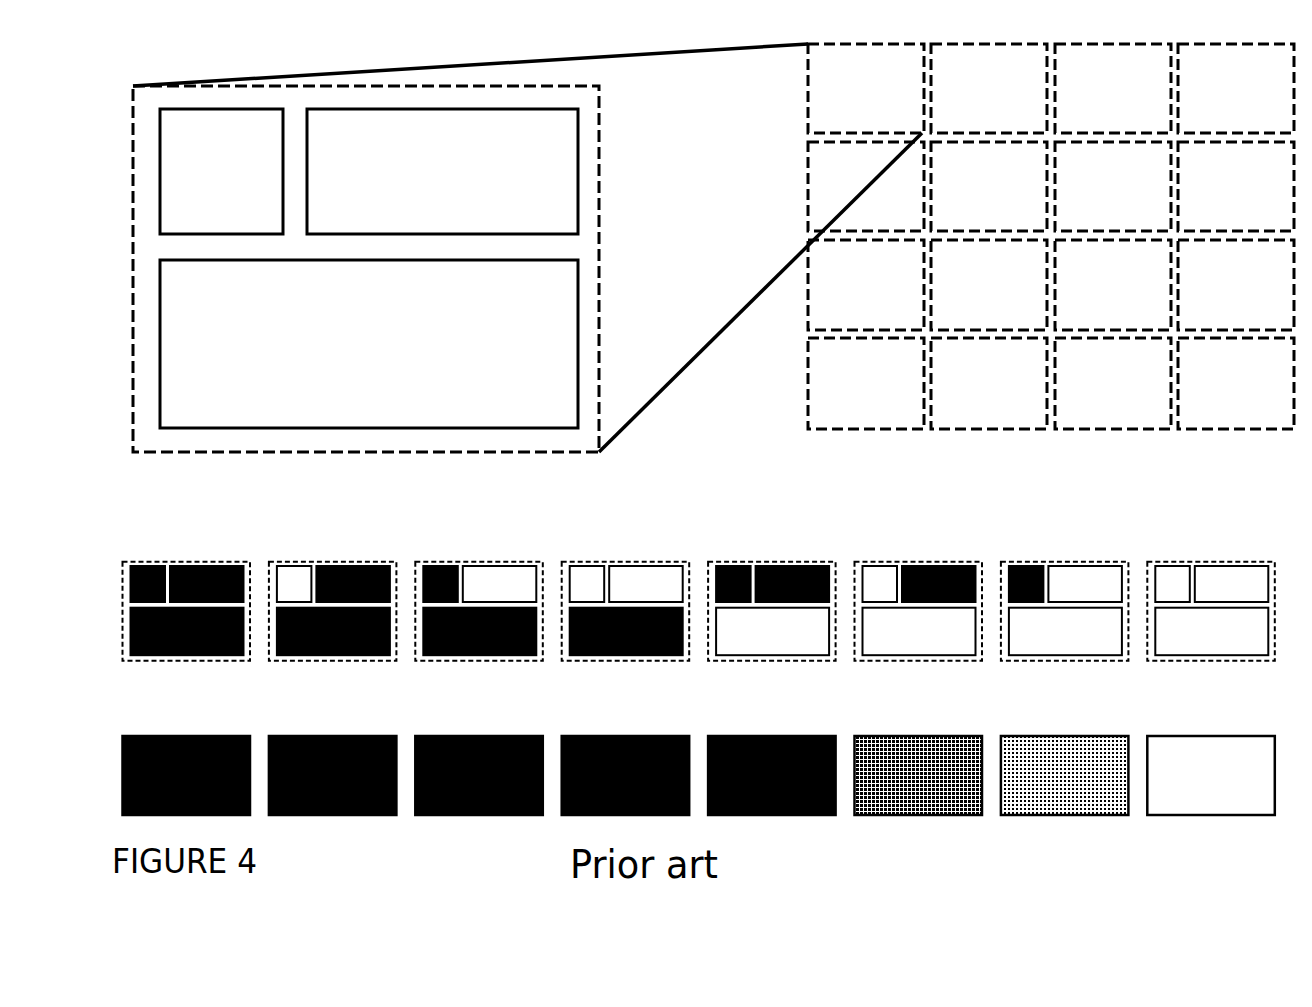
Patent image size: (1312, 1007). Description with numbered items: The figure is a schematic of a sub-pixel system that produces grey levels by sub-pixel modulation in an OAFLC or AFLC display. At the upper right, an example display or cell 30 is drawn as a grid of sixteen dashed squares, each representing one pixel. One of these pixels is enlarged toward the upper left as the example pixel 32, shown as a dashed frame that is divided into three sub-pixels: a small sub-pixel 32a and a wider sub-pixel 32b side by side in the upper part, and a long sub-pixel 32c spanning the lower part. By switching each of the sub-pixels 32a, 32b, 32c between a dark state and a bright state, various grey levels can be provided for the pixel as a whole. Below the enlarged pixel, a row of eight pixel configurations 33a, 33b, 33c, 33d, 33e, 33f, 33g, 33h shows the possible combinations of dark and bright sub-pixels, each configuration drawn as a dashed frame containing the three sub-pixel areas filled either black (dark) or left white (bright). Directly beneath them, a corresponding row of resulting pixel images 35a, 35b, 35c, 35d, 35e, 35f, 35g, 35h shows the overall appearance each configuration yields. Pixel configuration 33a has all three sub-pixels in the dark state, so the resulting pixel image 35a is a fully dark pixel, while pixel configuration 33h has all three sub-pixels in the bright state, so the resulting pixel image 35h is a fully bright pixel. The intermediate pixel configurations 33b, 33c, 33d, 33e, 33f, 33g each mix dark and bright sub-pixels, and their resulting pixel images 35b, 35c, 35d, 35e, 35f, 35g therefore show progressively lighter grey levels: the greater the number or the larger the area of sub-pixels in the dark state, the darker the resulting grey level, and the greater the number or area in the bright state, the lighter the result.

The display or cell 30 is at (801, 381).
The pixel 32 is at (600, 146).
The sub-pixel 32a is at (221, 171).
The sub-pixel 32b is at (442, 171).
The sub-pixel 32c is at (369, 344).
The pixel configuration 33a is at (144, 562).
The pixel configuration 33b is at (290, 562).
The pixel configuration 33c is at (436, 562).
The pixel configuration 33d is at (583, 562).
The pixel configuration 33e is at (729, 562).
The pixel configuration 33f is at (876, 562).
The pixel configuration 33g is at (1022, 562).
The pixel configuration 33h is at (1168, 562).
The resulting pixel image 35a is at (136, 736).
The resulting pixel image 35b is at (283, 736).
The resulting pixel image 35c is at (429, 736).
The resulting pixel image 35d is at (576, 736).
The resulting pixel image 35e is at (722, 736).
The resulting pixel image 35f is at (868, 736).
The resulting pixel image 35g is at (1015, 736).
The resulting pixel image 35h is at (1161, 736).